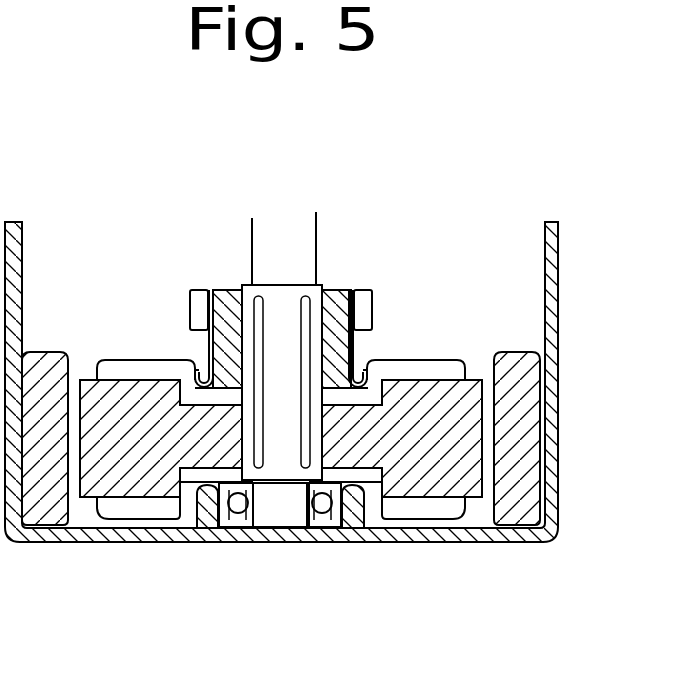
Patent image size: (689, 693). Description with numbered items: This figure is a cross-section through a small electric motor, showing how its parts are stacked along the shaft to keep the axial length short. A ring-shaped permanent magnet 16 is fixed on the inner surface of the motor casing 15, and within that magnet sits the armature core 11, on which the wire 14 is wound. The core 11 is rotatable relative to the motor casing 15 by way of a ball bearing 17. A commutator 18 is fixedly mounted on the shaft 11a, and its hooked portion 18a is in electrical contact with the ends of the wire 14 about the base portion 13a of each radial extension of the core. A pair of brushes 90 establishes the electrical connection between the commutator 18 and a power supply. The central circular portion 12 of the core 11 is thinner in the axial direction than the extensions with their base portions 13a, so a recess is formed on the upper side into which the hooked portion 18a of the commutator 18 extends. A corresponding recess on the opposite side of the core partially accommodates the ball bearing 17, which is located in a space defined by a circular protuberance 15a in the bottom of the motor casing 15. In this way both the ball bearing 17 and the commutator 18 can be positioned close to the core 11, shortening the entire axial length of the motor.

The armature core 11 is at (472, 380).
The shaft 11a is at (308, 242).
The central circular portion 12 is at (382, 527).
The base portion 13a is at (435, 498).
The wire 14 is at (118, 372).
The motor casing 15 is at (557, 330).
The circular protuberance 15a is at (352, 522).
The permanent magnet 16 is at (50, 352).
The ball bearing 17 is at (238, 503).
The commutator 18 is at (343, 290).
The hooked portion 18a is at (367, 362).
The brushes 90 is at (200, 290).